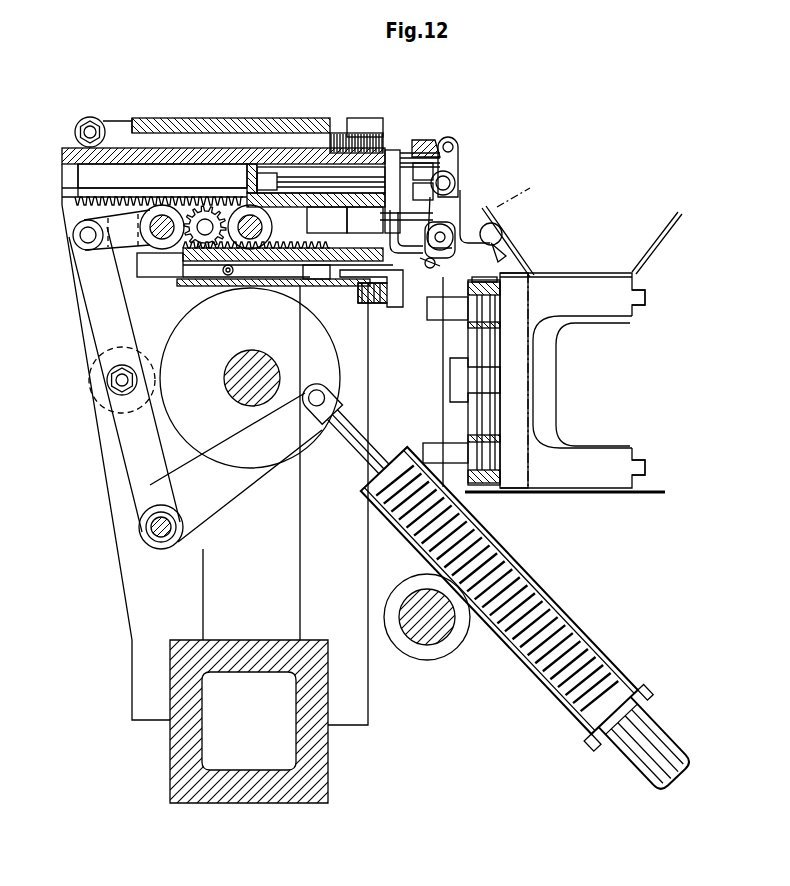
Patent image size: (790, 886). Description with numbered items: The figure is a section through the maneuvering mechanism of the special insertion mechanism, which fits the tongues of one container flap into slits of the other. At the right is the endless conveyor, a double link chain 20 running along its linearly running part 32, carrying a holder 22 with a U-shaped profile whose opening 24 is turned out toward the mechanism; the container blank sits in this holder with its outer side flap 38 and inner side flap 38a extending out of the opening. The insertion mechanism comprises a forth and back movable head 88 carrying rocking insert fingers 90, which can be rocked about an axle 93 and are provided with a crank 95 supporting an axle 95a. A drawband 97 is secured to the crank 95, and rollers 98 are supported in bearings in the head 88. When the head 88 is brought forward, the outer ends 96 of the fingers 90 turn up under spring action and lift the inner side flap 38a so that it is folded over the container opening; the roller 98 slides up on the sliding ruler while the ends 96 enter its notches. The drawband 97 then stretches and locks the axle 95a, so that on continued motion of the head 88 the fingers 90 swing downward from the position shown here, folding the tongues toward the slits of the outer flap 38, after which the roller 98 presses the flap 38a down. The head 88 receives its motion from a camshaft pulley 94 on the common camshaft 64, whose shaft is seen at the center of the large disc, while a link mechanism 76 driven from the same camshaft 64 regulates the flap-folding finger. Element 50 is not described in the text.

The link mechanism 76 is at (365, 127).
The movable head 88 is at (452, 138).
The axle 93 is at (452, 180).
The insert fingers 90 is at (457, 197).
The crank 95 is at (433, 213).
The axle 95a is at (448, 258).
The rollers 98 is at (496, 228).
The outer ends of the fingers 96 is at (504, 250).
The inside side flap 38a is at (526, 222).
The outer side flap 38 is at (668, 215).
The drawband 97 is at (300, 270).
The camshaft pulley 94 is at (292, 346).
The common camshaft 64 is at (281, 376).
The double link chain 20 is at (458, 316).
The linearly running part 32 is at (466, 437).
The clamping tabs 50 is at (645, 297).
The holders 22 is at (607, 319).
The openings 24 is at (580, 386).